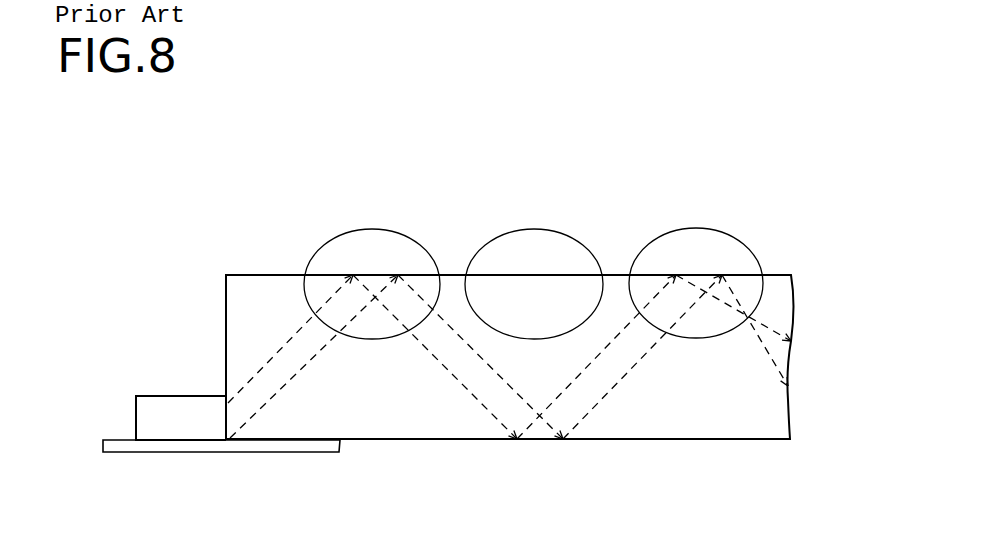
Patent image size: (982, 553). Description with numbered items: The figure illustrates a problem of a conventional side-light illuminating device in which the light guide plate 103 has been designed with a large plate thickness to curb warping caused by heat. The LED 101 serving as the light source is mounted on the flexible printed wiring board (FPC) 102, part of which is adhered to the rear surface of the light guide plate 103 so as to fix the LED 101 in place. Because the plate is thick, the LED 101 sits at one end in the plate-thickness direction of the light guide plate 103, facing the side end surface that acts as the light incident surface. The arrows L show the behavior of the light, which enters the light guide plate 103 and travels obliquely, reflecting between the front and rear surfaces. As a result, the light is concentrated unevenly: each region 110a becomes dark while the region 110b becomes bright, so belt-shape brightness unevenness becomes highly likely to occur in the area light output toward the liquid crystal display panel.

The light-emitting diode (LED) 101 is at (163, 405).
The flexible printed wiring board (FPC) 102 is at (163, 445).
The light guide plate 103 is at (242, 285).
The dark region 110a is at (372, 229).
The bright region 110b is at (533, 229).
The arrows showing behavior of light L is at (509, 357).